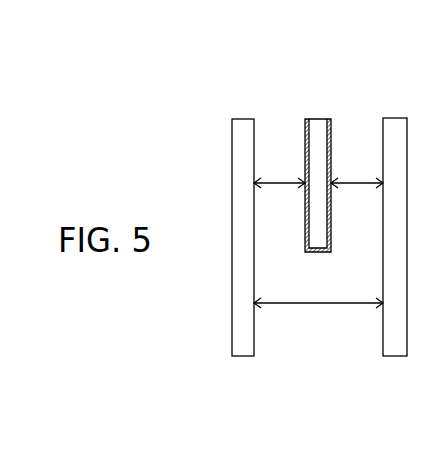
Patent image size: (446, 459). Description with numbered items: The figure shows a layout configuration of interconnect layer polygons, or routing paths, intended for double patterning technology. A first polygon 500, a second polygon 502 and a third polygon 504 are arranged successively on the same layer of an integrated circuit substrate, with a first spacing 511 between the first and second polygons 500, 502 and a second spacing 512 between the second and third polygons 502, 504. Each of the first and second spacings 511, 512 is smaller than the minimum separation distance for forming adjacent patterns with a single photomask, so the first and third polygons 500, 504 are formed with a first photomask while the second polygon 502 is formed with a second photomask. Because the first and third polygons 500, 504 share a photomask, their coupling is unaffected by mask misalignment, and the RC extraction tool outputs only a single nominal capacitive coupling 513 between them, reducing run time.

The first polygon 500 is at (232, 120).
The second polygon 502 is at (305, 119).
The third polygon 504 is at (395, 118).
The first spacing 511 is at (280, 183).
The second spacing 512 is at (354, 183).
The nominal capacitive coupling 513 is at (349, 305).